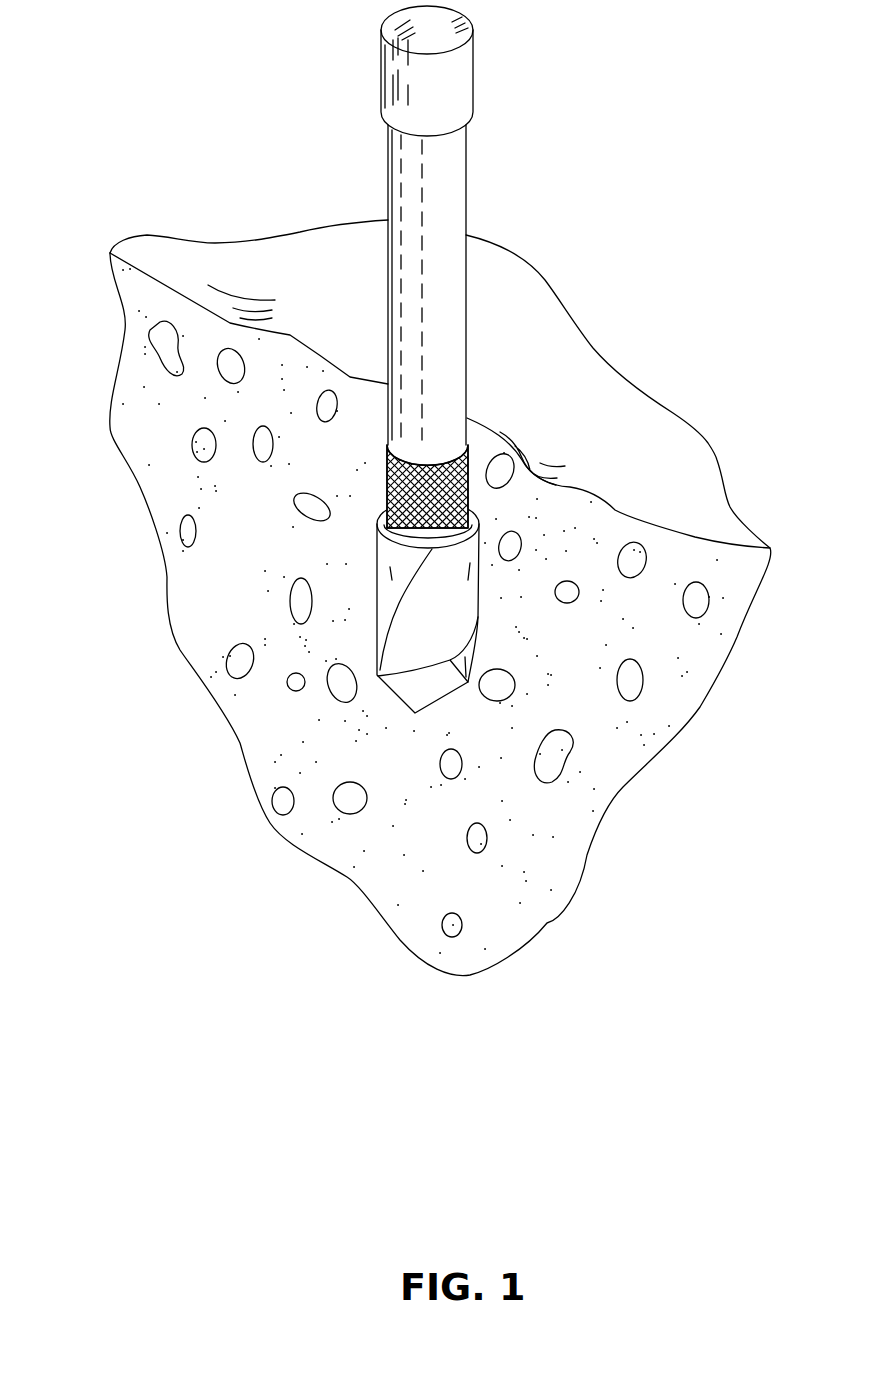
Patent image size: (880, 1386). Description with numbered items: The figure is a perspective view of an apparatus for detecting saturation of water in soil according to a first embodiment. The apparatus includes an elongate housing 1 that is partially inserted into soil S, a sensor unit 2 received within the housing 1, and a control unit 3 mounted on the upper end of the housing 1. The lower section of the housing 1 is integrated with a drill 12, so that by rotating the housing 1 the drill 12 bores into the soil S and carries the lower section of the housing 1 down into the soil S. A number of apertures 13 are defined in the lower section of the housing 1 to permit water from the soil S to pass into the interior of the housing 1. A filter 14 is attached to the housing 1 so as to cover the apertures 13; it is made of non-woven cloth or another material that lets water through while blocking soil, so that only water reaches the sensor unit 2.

The housing 1 is at (449, 272).
The sensor unit 2 is at (377, 475).
The control unit 3 is at (452, 80).
The drill 12 is at (410, 642).
The apertures 13 is at (467, 415).
The filter 14 is at (468, 497).
The soil S is at (612, 716).